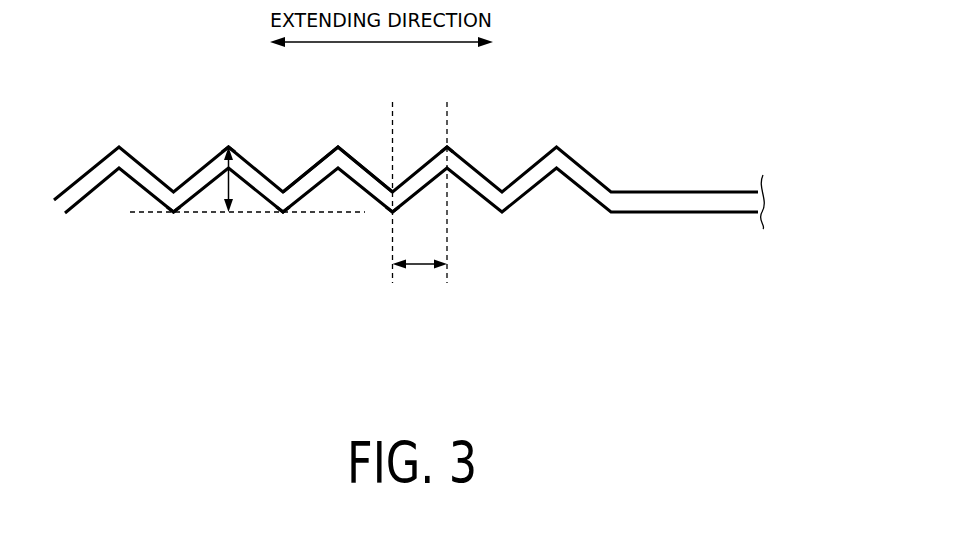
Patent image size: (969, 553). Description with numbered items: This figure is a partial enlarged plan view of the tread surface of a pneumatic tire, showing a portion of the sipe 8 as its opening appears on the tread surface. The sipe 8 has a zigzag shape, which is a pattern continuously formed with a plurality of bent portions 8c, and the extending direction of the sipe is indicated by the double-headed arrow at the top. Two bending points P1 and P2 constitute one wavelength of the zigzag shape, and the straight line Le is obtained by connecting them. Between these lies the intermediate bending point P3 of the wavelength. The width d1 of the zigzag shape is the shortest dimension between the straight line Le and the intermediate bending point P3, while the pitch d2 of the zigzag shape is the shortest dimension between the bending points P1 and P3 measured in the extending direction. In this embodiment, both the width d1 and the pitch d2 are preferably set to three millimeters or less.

The sipe 8 is at (653, 192).
The bent portion 8c is at (325, 160).
The intermediate bending point P3 is at (228, 147).
The bending point P1 is at (174, 214).
The bending point P2 is at (283, 214).
The straight line Le is at (142, 214).
The width of the zigzag shape d1 is at (238, 188).
The pitch of the zigzag shape d2 is at (420, 201).